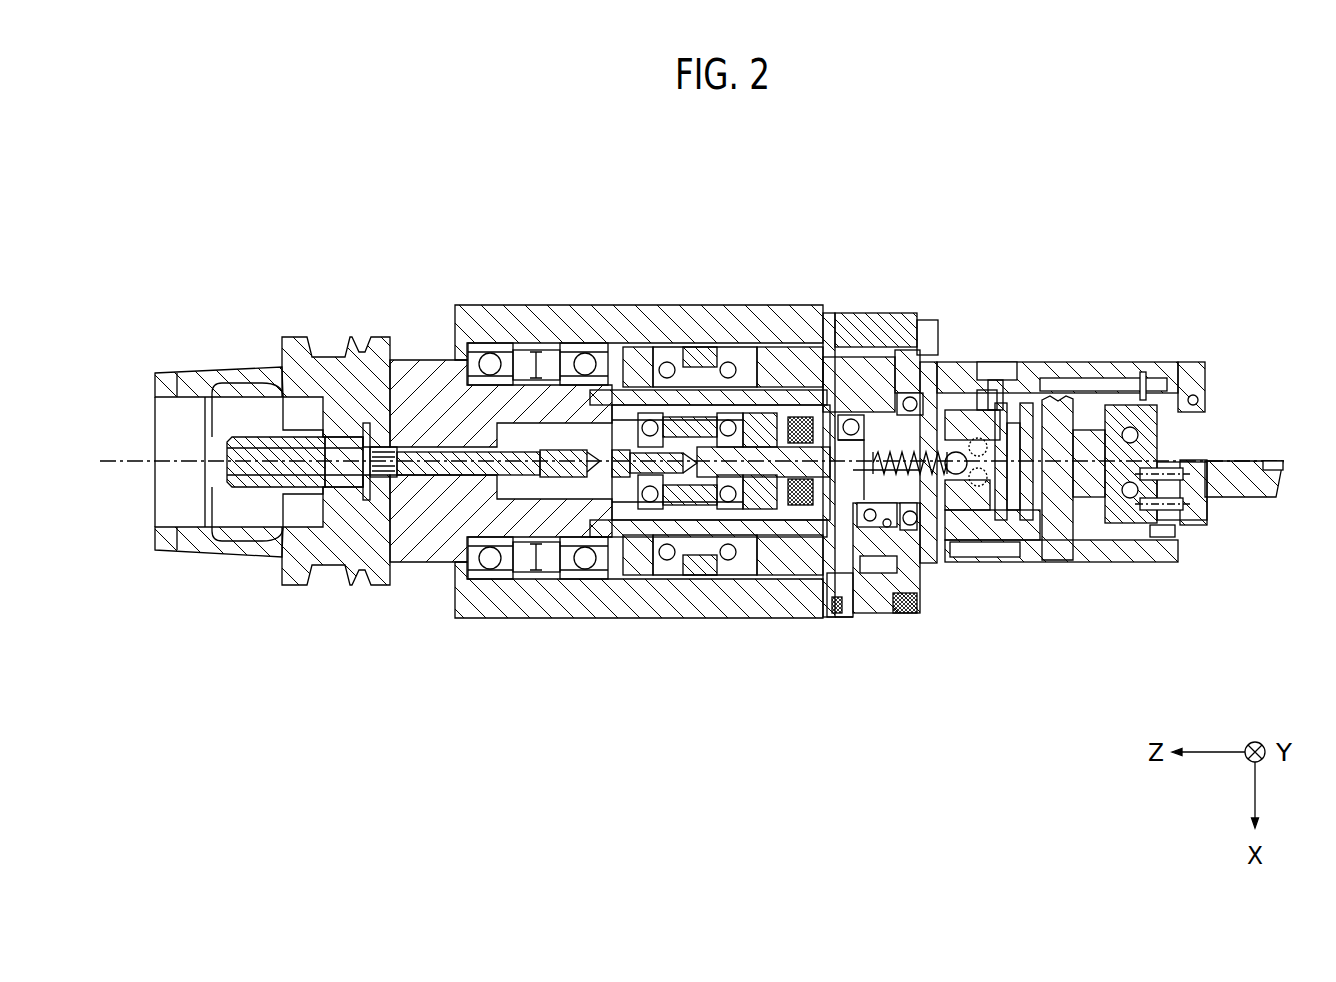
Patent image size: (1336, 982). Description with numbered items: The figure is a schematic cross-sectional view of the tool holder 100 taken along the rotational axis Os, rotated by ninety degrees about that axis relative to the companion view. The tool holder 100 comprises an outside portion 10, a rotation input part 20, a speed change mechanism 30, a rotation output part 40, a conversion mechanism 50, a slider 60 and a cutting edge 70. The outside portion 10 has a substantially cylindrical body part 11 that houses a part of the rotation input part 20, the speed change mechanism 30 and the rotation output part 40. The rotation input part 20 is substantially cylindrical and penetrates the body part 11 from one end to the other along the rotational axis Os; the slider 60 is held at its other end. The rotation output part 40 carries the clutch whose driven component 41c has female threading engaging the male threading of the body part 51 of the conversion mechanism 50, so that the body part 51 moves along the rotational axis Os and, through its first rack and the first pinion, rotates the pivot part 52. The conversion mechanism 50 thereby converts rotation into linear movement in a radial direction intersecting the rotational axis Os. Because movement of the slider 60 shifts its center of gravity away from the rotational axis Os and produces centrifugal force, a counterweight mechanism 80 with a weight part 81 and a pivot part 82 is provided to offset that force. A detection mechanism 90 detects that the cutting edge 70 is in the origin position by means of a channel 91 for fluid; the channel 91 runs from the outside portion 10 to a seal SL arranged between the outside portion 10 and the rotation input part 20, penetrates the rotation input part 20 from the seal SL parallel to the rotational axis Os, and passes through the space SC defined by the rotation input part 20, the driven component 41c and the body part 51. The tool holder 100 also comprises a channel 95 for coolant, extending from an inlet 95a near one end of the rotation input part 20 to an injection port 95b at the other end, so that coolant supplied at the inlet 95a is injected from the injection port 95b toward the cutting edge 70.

The tool holder 100 is at (163, 191).
The rotational axis Os is at (103, 461).
The outside portion 10 is at (560, 303).
The body part 11 is at (780, 318).
The rotation input part 20 is at (374, 330).
The speed change mechanism 30 is at (650, 340).
The rotation output part 40 is at (786, 420).
The driven component 41c is at (877, 575).
The conversion mechanism 50 is at (965, 403).
The body part 51 is at (1000, 563).
The pivot part 52 is at (1088, 563).
The slider 60 is at (1137, 560).
The cutting edge 70 is at (1273, 462).
The counterweight mechanism 80 is at (1192, 330).
The weight part 81 is at (1123, 415).
The pivot part 82 is at (1090, 440).
The detection mechanism 90 is at (620, 562).
The channel 91 is at (465, 553).
The channel 95 is at (585, 427).
The inlet 95a is at (247, 455).
The injection port 95b is at (1197, 397).
The seal SL is at (528, 560).
The space SC is at (940, 520).